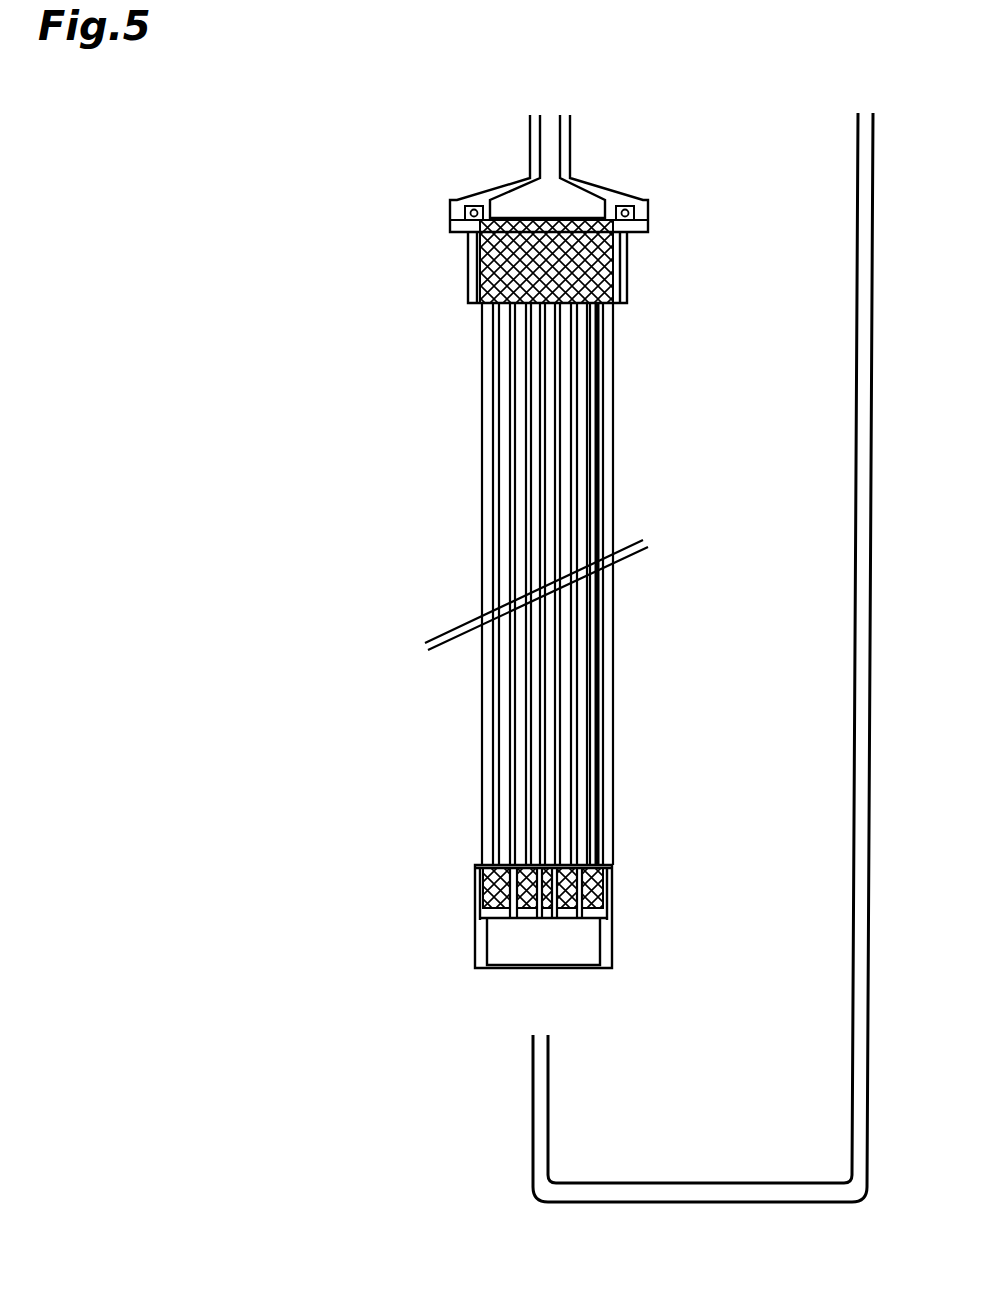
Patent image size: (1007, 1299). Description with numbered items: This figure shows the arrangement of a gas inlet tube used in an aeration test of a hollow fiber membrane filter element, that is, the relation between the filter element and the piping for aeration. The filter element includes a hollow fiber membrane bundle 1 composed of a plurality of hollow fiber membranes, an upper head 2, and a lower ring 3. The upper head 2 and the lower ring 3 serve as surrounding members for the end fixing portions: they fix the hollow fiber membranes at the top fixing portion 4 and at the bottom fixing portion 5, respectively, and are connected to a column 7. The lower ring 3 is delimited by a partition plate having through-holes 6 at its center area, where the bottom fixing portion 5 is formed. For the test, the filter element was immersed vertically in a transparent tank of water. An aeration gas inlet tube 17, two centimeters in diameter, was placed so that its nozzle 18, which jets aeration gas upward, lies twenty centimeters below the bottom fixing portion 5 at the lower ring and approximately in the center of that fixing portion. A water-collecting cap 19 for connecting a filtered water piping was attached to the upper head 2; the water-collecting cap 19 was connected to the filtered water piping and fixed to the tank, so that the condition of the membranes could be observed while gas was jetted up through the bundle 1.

The hollow fiber membrane bundle 1 is at (575, 703).
The upper head 2 is at (468, 256).
The lower ring 3 is at (475, 900).
The top fixing portion 4 is at (608, 304).
The bottom fixing portion 5 is at (600, 880).
The through-holes 6 is at (547, 928).
The column 7 is at (480, 515).
The aeration gas inlet tube 17 is at (865, 222).
The nozzle 18 is at (540, 1032).
The water-collecting cap 19 is at (497, 185).